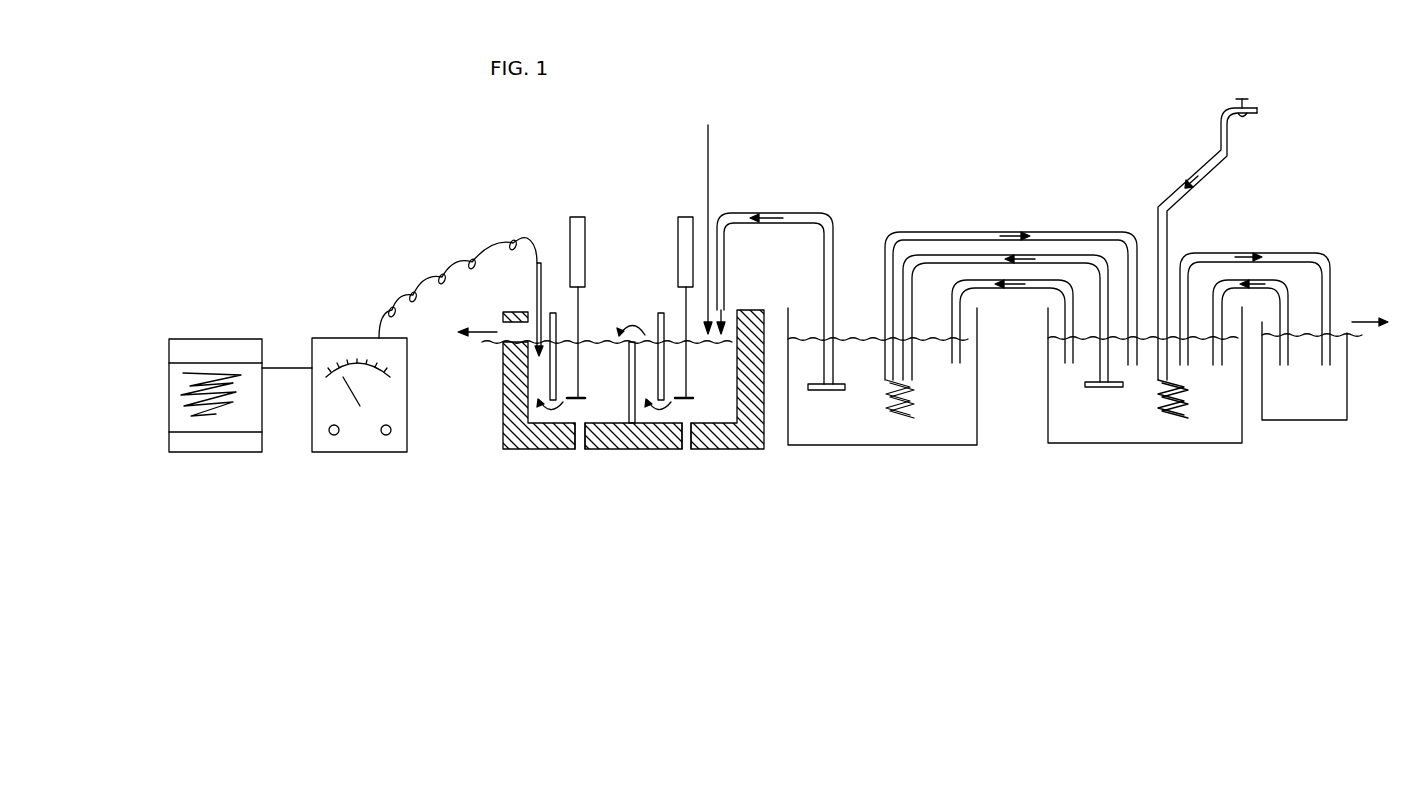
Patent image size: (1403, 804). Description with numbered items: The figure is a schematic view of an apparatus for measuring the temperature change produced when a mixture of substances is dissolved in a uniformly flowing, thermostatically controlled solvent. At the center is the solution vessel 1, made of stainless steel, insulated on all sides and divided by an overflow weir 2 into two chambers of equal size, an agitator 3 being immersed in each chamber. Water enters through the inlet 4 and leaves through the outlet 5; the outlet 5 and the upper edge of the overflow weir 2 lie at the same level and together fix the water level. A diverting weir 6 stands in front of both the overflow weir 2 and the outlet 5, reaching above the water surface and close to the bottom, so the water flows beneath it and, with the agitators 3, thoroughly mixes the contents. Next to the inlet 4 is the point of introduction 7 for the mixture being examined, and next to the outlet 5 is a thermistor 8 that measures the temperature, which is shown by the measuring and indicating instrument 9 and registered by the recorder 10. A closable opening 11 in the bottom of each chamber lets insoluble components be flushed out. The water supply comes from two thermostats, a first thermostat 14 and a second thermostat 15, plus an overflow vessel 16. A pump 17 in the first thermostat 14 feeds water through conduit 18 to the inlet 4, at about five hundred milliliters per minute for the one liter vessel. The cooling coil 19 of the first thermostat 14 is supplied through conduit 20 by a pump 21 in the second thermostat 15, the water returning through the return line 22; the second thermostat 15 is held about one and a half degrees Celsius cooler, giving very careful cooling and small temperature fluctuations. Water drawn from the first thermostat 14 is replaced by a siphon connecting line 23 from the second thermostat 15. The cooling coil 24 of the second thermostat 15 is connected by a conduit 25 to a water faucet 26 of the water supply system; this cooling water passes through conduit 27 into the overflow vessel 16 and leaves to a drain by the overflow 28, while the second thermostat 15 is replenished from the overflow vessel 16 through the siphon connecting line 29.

The solution vessel 1 is at (610, 415).
The overflow weir 2 is at (629, 368).
The agitator 3 is at (582, 400).
The inlet 4 is at (724, 304).
The outlet 5 is at (500, 333).
The diverting weir 6 is at (556, 352).
The point of introduction 7 is at (707, 326).
The thermistor 8 is at (540, 276).
The measuring and indicating instrument 9 is at (367, 442).
The recorder 10 is at (227, 444).
The closable opening 11 is at (580, 448).
The first thermostat 14 is at (827, 440).
The second thermostat 15 is at (1103, 440).
The overflow vessel 16 is at (1316, 420).
The pump 17 is at (841, 390).
The conduit 18 is at (823, 259).
The cooling coil 19 is at (914, 398).
The conduit 20 is at (912, 300).
The pump 21 is at (1113, 388).
The return line 22 is at (960, 233).
The connecting line 23 is at (1040, 288).
The cooling coil 24 is at (1191, 398).
The water supply conduit 25 is at (1172, 194).
The water faucet 26 is at (1249, 112).
The conduit 27 is at (1292, 253).
The overflow 28 is at (1345, 305).
The connecting line 29 is at (1287, 322).